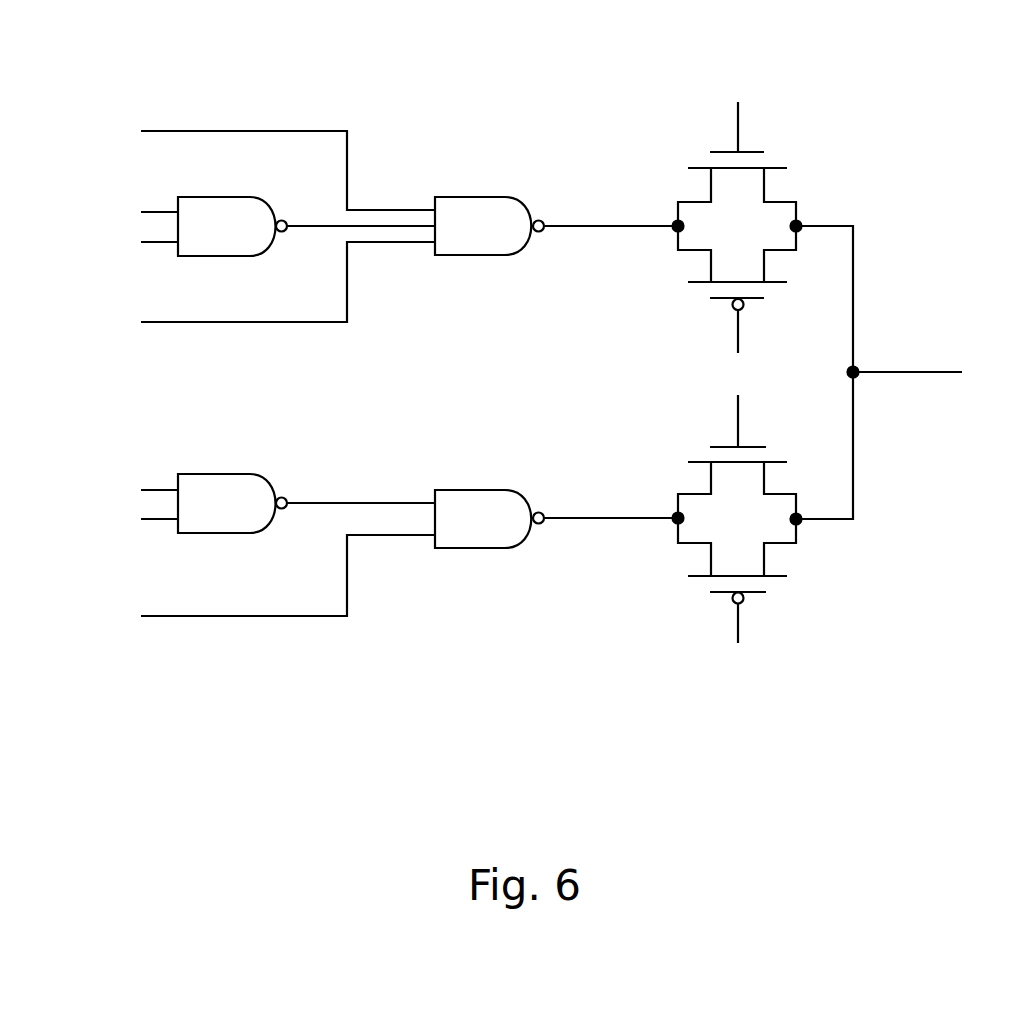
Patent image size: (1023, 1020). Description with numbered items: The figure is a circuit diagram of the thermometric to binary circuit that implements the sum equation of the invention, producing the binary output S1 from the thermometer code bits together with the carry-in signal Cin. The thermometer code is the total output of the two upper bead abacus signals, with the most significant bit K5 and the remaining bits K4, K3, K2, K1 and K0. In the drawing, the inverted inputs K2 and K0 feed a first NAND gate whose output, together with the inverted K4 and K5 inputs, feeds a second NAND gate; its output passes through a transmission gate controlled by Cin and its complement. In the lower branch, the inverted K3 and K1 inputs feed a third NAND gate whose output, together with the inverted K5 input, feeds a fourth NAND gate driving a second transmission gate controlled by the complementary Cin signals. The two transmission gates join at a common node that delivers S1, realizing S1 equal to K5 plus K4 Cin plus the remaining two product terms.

The thermometer code bit K4 is at (126, 112).
The thermometer code bit K2 is at (126, 193).
The thermometer code bit K0 is at (126, 240).
The thermometer code bit K5 is at (126, 309).
The thermometer code bit K3 is at (126, 472).
The thermometer code bit K1 is at (126, 518).
The carry-in signal Cin is at (757, 359).
The binary sum output S1 is at (900, 372).